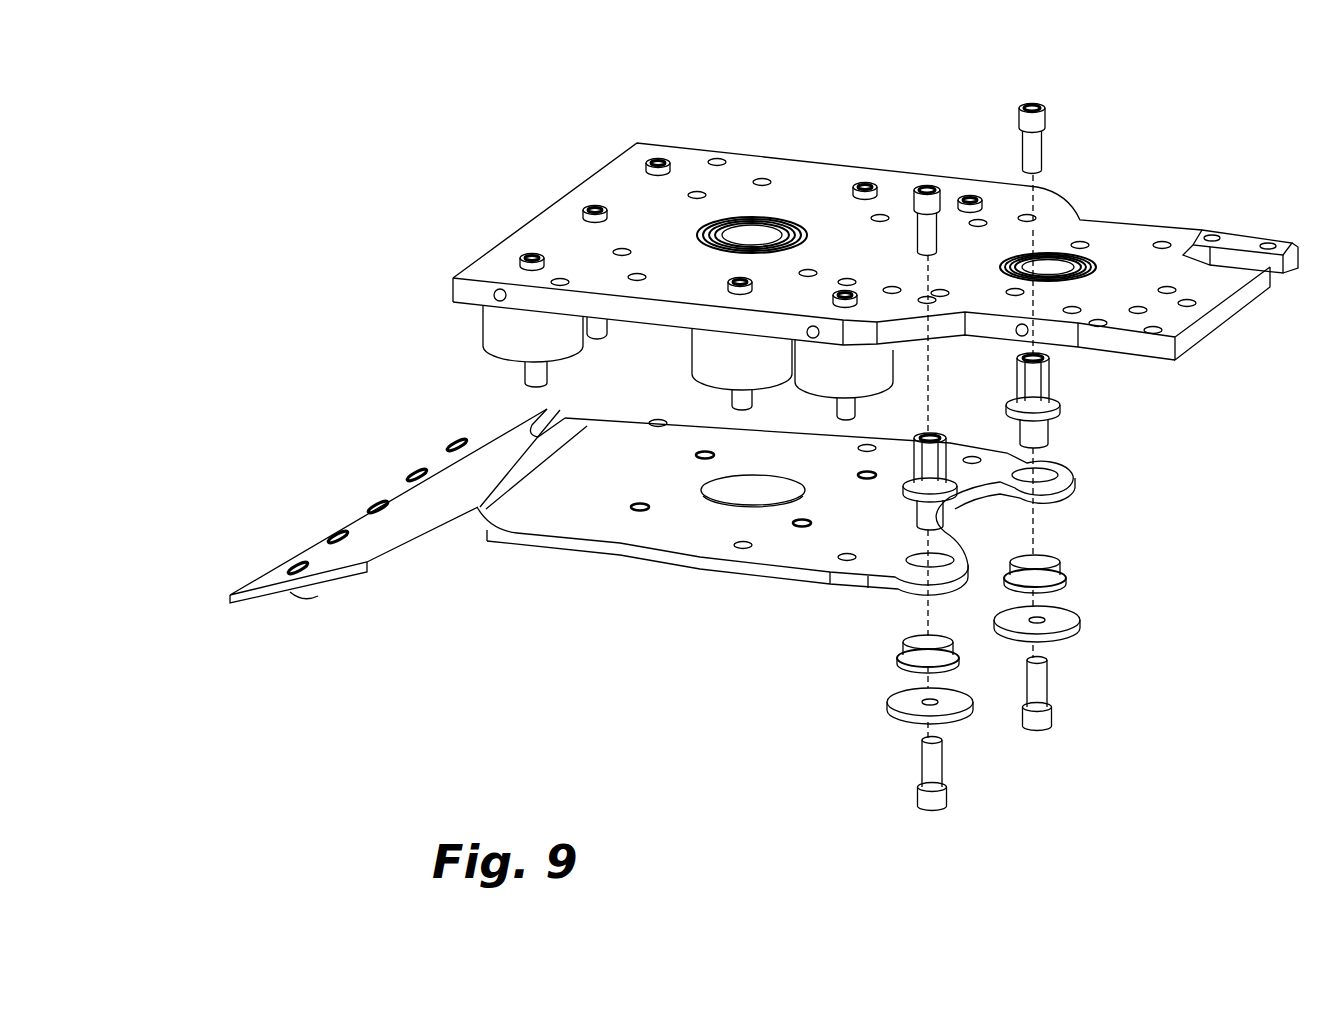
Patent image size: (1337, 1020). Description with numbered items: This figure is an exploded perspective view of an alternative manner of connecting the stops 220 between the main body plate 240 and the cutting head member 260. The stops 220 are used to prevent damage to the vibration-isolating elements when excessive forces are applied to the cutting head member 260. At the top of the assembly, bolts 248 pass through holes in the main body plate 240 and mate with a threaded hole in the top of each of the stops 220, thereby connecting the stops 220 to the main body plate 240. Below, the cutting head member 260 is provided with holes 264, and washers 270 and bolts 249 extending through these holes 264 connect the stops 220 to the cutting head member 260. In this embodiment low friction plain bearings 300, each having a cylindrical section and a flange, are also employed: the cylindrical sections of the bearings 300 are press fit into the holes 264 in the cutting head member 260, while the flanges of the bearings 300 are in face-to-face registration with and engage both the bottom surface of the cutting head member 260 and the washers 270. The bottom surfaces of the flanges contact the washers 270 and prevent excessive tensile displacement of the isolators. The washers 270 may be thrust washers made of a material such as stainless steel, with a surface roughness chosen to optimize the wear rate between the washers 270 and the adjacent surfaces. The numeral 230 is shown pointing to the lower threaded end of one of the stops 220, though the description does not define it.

The main body plate 240 is at (808, 180).
The bolts 248 is at (930, 213).
The stops 220 is at (1068, 382).
The threaded end of standoff 230 is at (1052, 437).
The cutting head member 260 is at (567, 553).
The holes 264 is at (1045, 468).
The low friction plain bearings 300 is at (1052, 573).
The washers 270 is at (1072, 628).
The bolts 249 is at (1040, 675).